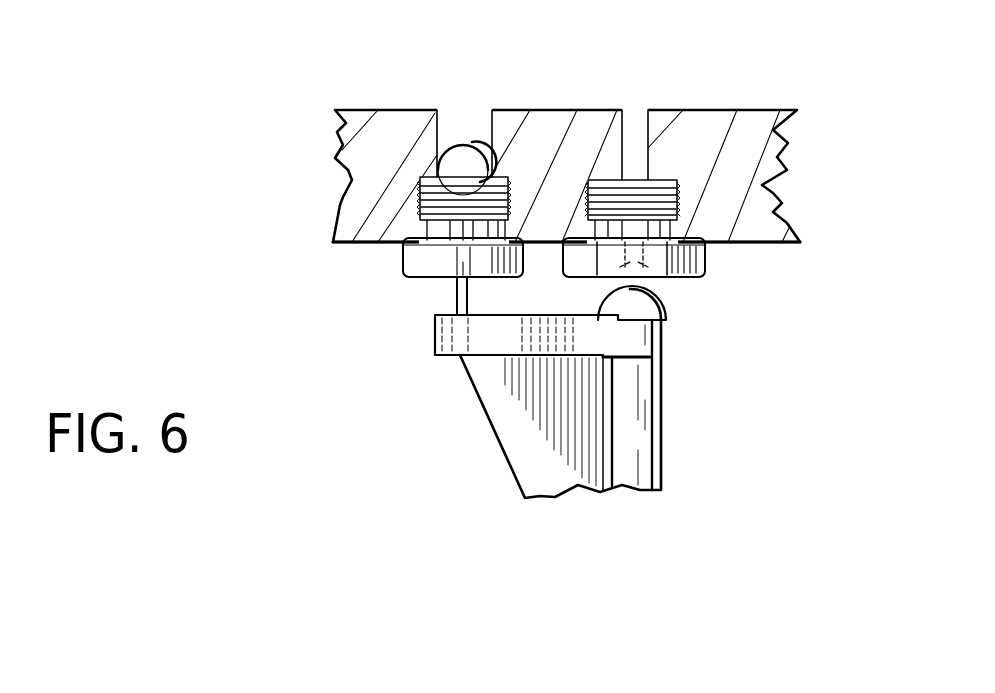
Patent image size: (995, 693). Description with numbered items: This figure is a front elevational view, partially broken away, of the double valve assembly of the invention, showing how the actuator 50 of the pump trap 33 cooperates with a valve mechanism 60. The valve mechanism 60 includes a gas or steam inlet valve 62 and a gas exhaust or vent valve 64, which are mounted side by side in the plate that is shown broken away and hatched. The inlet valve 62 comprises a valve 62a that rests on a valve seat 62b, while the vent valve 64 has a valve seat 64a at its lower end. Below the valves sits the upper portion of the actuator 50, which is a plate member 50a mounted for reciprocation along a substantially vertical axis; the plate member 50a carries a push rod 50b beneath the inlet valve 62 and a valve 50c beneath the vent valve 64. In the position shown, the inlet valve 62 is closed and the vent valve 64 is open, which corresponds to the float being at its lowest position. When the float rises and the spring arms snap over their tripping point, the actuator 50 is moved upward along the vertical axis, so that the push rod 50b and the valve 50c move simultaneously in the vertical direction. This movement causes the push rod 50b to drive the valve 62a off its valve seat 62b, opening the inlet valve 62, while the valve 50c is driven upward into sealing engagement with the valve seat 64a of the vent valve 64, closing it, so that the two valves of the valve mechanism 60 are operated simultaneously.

The pump trap 33 is at (780, 112).
The valve mechanism 60 is at (296, 187).
The gas inlet valve 62 is at (435, 92).
The valve 62a is at (454, 158).
The valve seat 62b is at (412, 190).
The gas exhaust or vent valve 64 is at (644, 95).
The valve seat 64a is at (653, 276).
The actuator 50 is at (482, 464).
The plate member 50a is at (435, 341).
The push rod 50b is at (455, 294).
The valve 50c is at (668, 303).